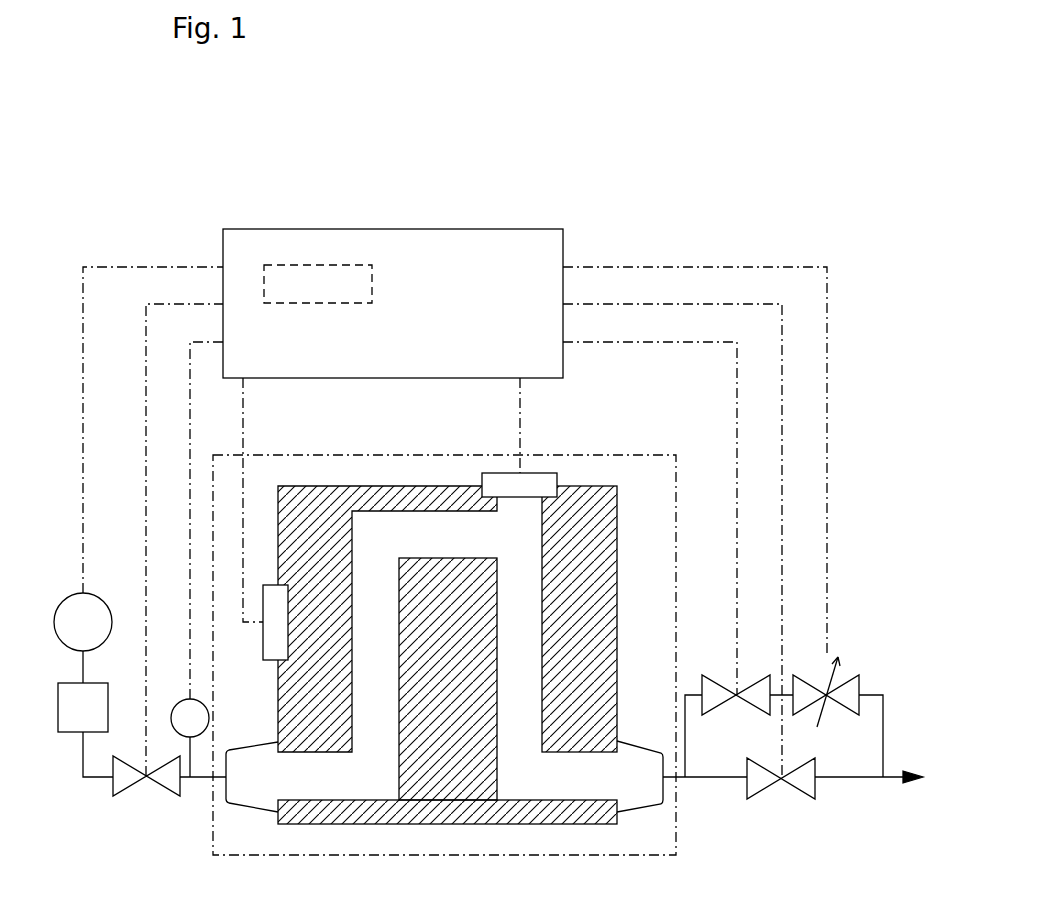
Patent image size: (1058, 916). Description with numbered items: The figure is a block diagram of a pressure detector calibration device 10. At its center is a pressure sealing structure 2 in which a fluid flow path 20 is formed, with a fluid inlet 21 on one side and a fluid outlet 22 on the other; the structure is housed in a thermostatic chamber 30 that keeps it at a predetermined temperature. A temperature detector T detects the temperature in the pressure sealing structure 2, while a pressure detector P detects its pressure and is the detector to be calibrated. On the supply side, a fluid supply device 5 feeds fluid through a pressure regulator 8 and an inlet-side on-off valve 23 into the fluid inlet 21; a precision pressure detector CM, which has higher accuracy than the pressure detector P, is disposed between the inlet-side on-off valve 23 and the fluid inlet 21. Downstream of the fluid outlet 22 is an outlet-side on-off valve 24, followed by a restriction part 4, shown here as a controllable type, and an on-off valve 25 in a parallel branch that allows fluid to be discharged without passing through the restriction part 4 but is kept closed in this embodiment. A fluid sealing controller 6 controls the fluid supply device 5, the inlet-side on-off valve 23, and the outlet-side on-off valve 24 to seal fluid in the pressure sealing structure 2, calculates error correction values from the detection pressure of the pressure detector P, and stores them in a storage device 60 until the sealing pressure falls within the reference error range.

The pressure detector calibration device 10 is at (857, 432).
The fluid sealing controller 6 is at (472, 229).
The storage device 60 is at (313, 265).
The thermostatic chamber 30 is at (418, 455).
The pressure sealing structure 2 is at (617, 565).
The fluid flow path 20 is at (373, 758).
The pressure detector P is at (545, 473).
The temperature detector T is at (264, 661).
The fluid inlet 21 is at (250, 810).
The fluid outlet 22 is at (640, 805).
The inlet-side on-off valve 23 is at (160, 795).
The outlet-side on-off valve 24 is at (717, 675).
The restriction part 4 is at (845, 675).
The on-off valve 25 is at (800, 800).
The fluid supply device 5 is at (64, 598).
The pressure regulator 8 is at (70, 733).
The precision pressure detector CM is at (178, 699).